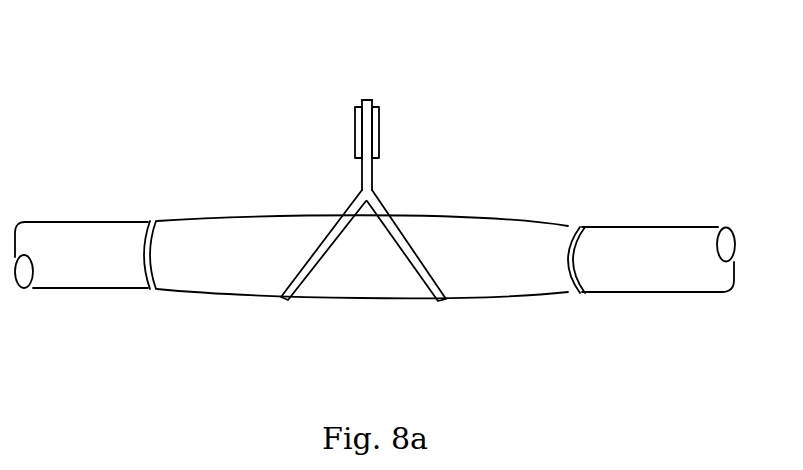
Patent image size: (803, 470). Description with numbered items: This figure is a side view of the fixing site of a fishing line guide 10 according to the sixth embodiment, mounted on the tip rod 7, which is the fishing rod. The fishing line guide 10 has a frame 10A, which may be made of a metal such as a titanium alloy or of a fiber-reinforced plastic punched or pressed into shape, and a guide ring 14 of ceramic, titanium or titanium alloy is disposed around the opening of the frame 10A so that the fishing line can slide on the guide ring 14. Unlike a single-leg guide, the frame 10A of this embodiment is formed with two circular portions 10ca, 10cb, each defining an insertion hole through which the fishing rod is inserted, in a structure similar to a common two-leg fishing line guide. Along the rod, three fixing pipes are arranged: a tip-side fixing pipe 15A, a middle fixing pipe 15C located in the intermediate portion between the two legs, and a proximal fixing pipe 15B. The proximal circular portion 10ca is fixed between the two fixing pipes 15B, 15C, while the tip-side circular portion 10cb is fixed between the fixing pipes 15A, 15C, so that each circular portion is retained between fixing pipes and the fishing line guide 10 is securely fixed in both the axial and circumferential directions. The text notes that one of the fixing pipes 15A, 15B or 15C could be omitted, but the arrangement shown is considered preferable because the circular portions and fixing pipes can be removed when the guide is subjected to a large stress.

The tip rod 7 is at (653, 240).
The fishing line guide 10 is at (396, 87).
The frame 10A is at (367, 98).
The proximal circular portion 10ca is at (415, 257).
The tip-side circular portion 10cb is at (318, 250).
The guide ring 14 is at (355, 132).
The tip-side fixing pipe 15A is at (222, 282).
The proximal fixing pipe 15B is at (525, 282).
The middle fixing pipe 15C is at (362, 282).